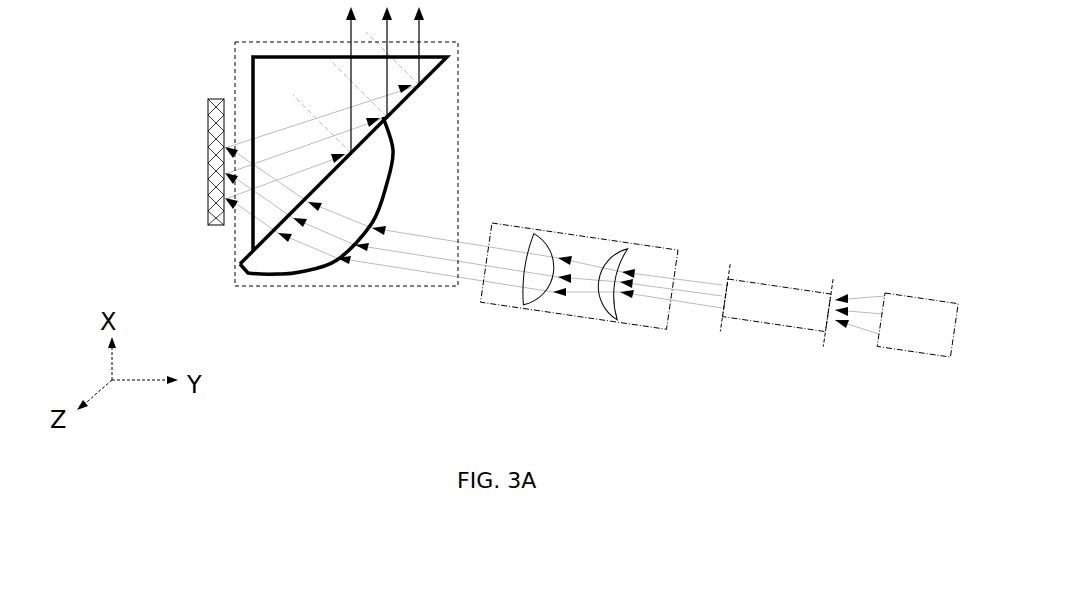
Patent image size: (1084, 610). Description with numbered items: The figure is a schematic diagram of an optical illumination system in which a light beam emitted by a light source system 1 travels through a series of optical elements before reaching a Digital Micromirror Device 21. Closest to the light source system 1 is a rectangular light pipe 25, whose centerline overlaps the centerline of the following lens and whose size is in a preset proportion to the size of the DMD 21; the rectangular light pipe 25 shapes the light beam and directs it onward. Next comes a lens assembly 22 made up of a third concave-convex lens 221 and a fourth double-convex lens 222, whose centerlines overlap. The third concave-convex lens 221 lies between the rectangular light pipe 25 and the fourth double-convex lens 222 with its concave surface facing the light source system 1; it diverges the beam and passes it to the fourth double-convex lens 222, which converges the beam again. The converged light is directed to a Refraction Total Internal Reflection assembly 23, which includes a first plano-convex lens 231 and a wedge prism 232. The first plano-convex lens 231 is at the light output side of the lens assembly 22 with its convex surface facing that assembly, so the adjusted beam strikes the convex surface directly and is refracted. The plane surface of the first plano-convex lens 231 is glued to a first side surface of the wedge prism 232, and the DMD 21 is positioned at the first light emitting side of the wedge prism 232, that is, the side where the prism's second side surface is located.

The light source system 1 is at (920, 340).
The Digital Micromirror Device 21 is at (207, 193).
The lens assembly 22 is at (575, 235).
The third concave-convex lens 221 is at (600, 304).
The fourth double-convex lens 222 is at (528, 303).
The Refraction Total Internal Reflection assembly 23 is at (457, 165).
The first plano-convex lens 231 is at (240, 266).
The wedge prism 232 is at (253, 233).
The rectangular light pipe 25 is at (790, 323).